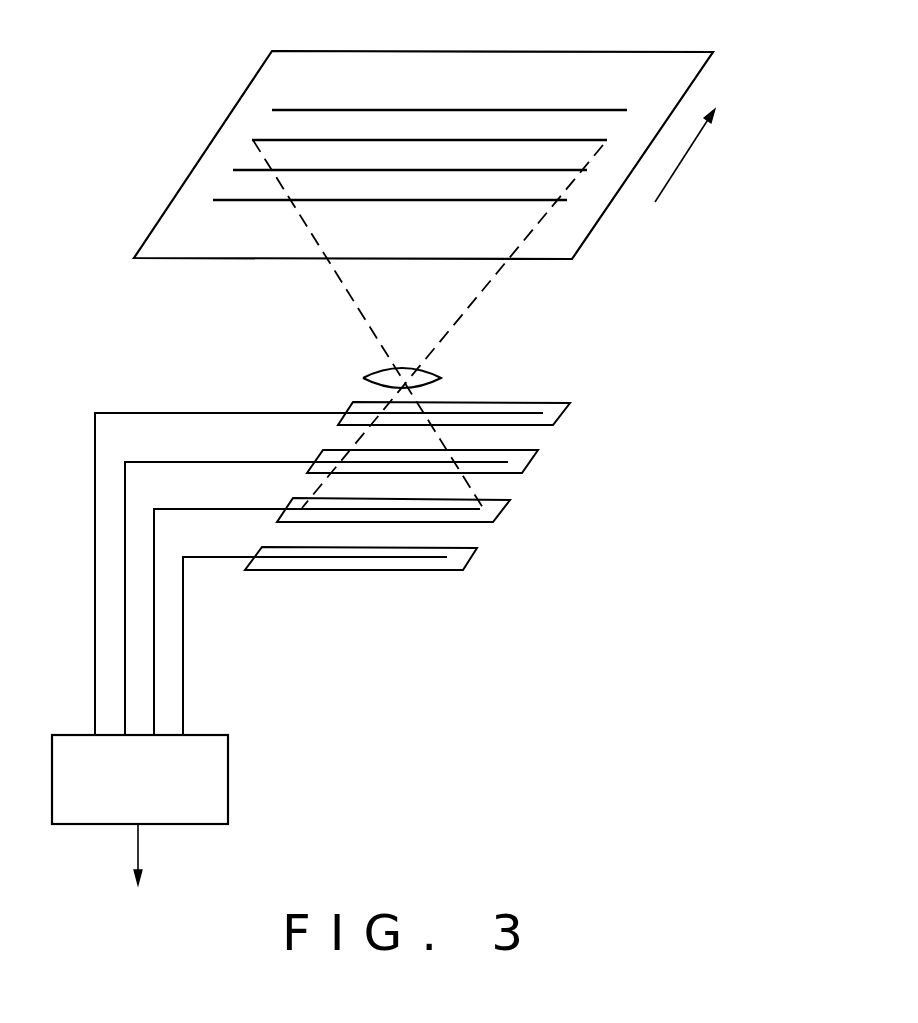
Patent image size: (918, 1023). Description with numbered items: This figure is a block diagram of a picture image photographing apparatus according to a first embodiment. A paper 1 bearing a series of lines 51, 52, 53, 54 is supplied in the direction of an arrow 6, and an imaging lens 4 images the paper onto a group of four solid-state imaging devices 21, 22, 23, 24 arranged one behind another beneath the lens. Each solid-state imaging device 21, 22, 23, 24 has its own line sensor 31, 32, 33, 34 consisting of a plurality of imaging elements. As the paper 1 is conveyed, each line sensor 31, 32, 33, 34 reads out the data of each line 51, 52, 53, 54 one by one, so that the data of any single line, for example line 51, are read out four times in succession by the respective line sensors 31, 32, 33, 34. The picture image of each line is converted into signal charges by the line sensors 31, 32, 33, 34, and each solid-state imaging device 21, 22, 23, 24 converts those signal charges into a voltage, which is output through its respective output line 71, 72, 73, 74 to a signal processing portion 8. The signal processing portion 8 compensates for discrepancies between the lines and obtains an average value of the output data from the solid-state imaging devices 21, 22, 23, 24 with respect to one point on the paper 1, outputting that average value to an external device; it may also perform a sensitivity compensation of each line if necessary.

The paper 1 is at (638, 52).
The line 51 is at (338, 202).
The line 52 is at (448, 170).
The line 53 is at (385, 138).
The line 54 is at (510, 110).
The arrow 6 is at (674, 181).
The imaging lens 4 is at (442, 378).
The solid-state imaging device 21 is at (568, 414).
The solid-state imaging device 22 is at (530, 467).
The solid-state imaging device 23 is at (503, 518).
The solid-state imaging device 24 is at (475, 562).
The line sensor 31 is at (543, 413).
The line sensor 32 is at (508, 462).
The line sensor 33 is at (503, 508).
The line sensor 34 is at (463, 555).
The output line 71 is at (220, 412).
The output line 72 is at (220, 461).
The output line 73 is at (220, 508).
The output line 74 is at (220, 556).
The signal processing portion 8 is at (161, 810).